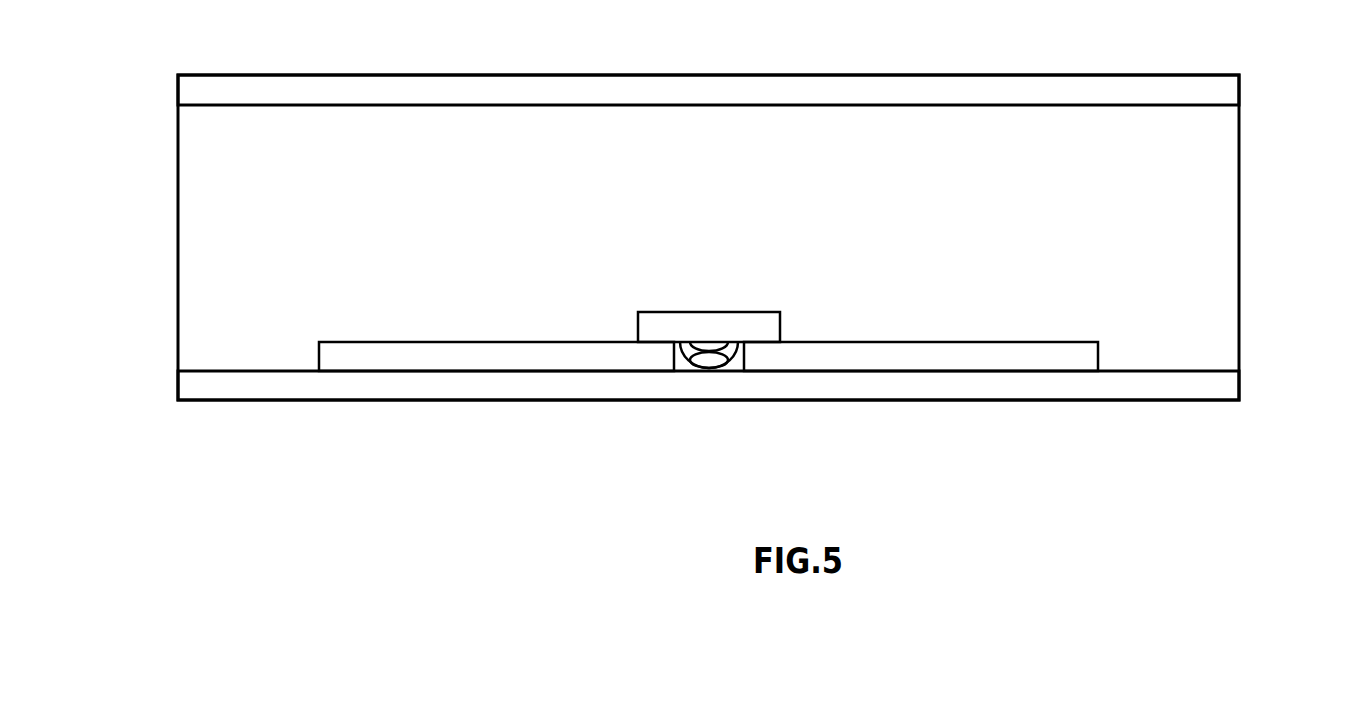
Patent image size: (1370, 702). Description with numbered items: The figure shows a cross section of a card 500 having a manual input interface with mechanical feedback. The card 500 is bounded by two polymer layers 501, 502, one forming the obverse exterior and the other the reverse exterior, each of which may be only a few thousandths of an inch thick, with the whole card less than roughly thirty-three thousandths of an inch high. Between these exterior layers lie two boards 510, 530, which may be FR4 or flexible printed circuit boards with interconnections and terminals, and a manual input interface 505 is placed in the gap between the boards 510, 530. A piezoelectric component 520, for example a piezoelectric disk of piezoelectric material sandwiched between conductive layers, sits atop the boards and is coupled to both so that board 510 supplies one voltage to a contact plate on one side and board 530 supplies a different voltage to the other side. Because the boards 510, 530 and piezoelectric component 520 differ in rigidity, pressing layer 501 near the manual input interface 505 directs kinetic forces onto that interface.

The card 500 is at (1319, 60).
The polymer layer 501 is at (288, 400).
The polymer layer 502 is at (360, 75).
The manual input interface 505 is at (676, 353).
The board 510 is at (585, 342).
The piezoelectric component 520 is at (672, 312).
The board 530 is at (938, 342).